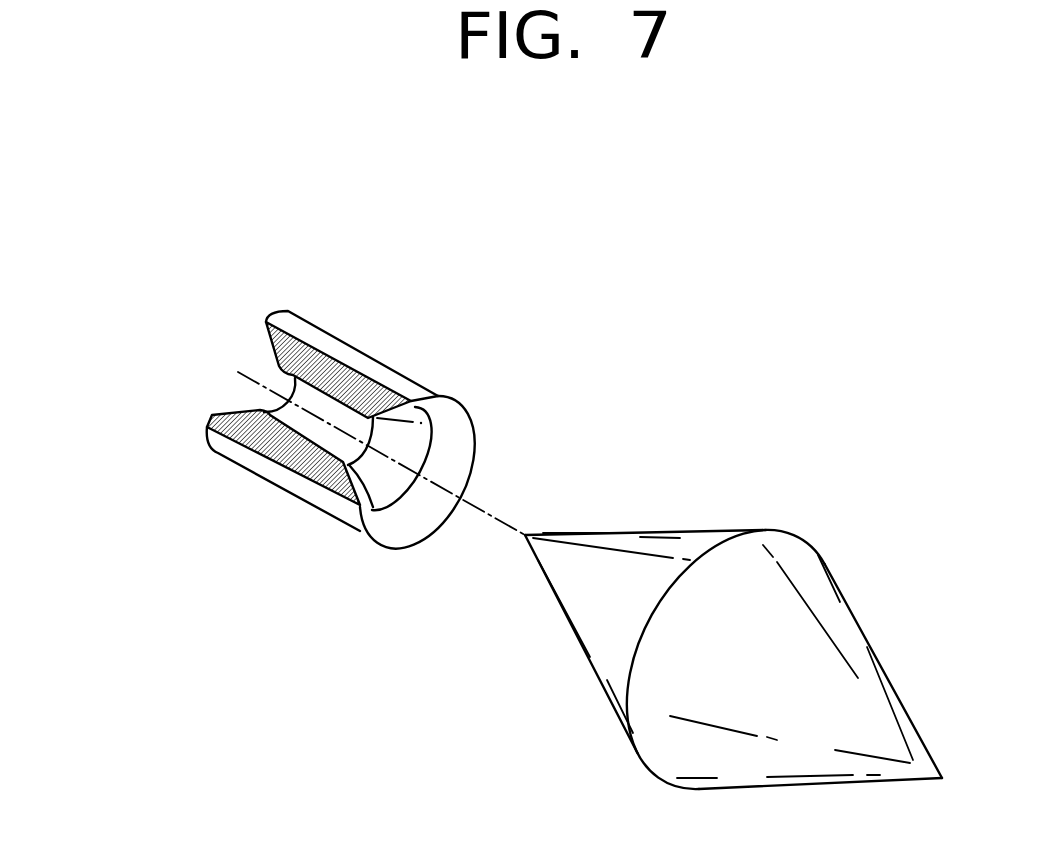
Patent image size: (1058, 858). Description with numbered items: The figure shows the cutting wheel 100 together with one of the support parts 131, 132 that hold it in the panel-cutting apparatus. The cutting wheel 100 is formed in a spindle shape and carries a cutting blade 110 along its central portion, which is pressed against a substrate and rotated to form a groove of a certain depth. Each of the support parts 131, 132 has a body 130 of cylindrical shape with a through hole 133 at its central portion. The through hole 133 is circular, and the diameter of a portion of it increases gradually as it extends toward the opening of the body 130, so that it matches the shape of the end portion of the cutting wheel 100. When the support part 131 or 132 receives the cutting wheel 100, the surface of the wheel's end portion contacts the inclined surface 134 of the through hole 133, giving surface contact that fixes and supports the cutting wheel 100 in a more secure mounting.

The cutting wheel 100 is at (668, 768).
The cutting blade 110 is at (638, 648).
The body 130 is at (370, 363).
The support part 131 is at (203, 442).
The support part 132 is at (338, 370).
The through hole 133 is at (314, 382).
The inclined surface 134 is at (427, 450).